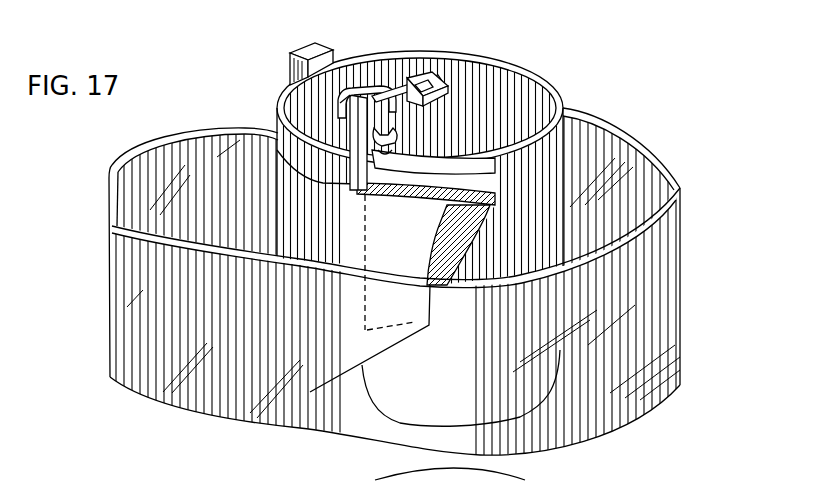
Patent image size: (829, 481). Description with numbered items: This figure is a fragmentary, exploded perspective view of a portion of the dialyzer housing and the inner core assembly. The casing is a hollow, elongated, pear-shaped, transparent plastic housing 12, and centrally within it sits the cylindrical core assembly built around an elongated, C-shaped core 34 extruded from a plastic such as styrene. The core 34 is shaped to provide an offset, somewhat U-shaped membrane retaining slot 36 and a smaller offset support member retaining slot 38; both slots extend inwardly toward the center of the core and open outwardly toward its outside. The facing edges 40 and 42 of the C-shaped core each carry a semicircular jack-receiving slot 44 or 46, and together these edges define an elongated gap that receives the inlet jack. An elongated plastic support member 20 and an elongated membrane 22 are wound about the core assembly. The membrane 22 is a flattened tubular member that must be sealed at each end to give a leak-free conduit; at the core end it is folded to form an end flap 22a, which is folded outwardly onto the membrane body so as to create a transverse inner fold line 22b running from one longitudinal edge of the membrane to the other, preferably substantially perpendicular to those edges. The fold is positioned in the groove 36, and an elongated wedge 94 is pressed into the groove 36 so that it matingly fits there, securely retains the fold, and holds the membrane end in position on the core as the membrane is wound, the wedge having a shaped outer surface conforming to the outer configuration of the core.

The housing 12 is at (681, 331).
The core 34 is at (564, 105).
The membrane retaining slot 36 is at (432, 84).
The support member retaining slot 38 is at (405, 150).
The facing edge 40 is at (354, 128).
The facing edge 42 is at (365, 165).
The jack-receiving slot 44 is at (412, 90).
The jack-receiving slot 46 is at (365, 138).
The support member 20 is at (490, 206).
The membrane 22 is at (432, 250).
The end flap 22a is at (349, 78).
The fold line 22b is at (400, 77).
The wedge 94 is at (313, 43).